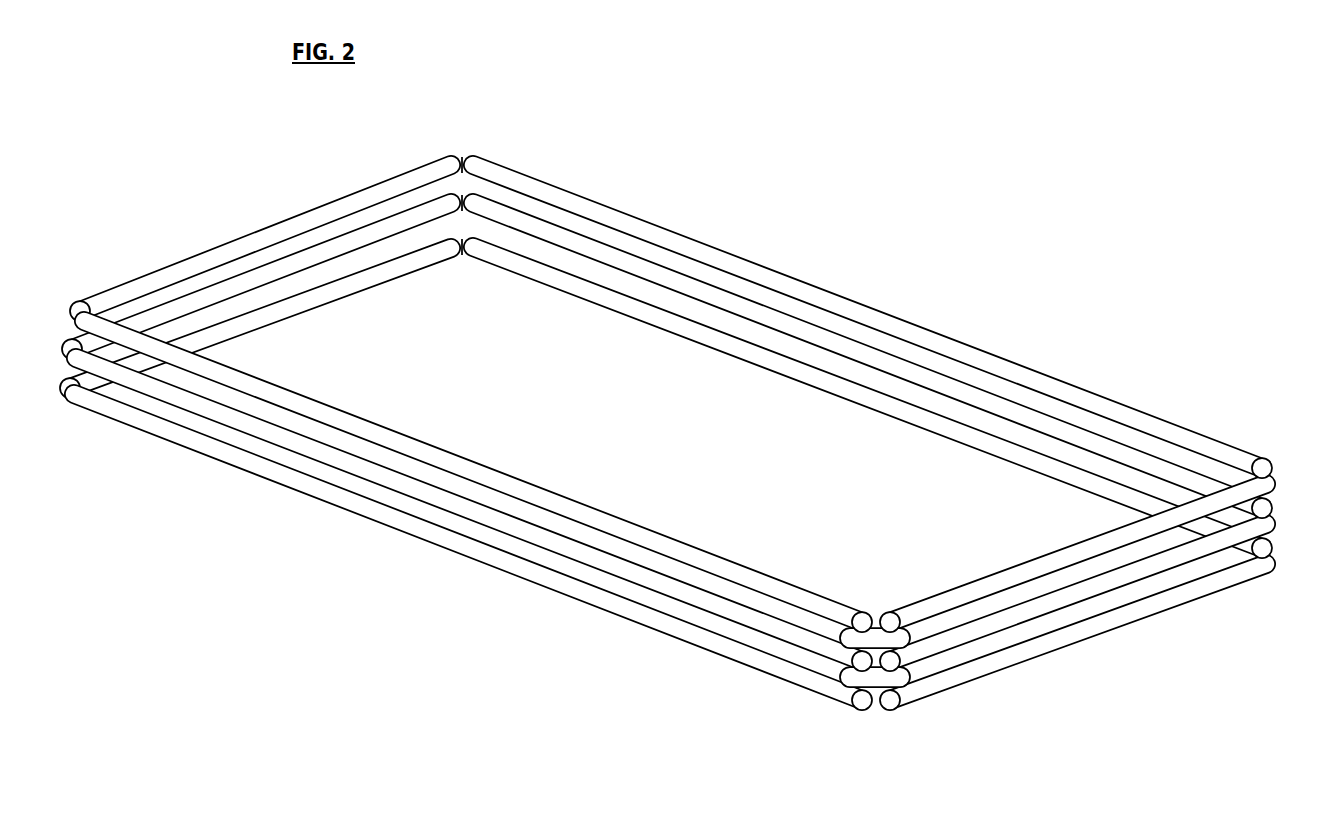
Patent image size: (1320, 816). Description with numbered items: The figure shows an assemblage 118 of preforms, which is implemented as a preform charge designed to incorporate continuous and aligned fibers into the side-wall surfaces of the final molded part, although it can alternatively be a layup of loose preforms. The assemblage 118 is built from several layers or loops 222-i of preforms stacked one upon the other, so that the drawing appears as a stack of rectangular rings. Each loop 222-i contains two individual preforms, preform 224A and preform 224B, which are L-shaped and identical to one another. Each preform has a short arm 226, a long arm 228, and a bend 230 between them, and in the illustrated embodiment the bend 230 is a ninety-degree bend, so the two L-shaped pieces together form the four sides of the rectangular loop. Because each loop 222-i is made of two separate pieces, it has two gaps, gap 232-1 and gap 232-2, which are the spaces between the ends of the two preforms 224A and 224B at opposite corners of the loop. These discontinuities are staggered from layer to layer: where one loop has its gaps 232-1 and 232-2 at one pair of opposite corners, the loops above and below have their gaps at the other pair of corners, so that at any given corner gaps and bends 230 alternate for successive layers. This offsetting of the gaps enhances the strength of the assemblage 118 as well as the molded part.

The assemblage of preforms 118 is at (666, 433).
The loop of preforms 222-i is at (750, 677).
The preform 224A is at (468, 541).
The preform 224B is at (1100, 380).
The short arm 226 is at (260, 237).
The long arm 228 is at (573, 512).
The bend 230 is at (78, 305).
The gap 232-1 is at (464, 152).
The gap 232-2 is at (885, 603).